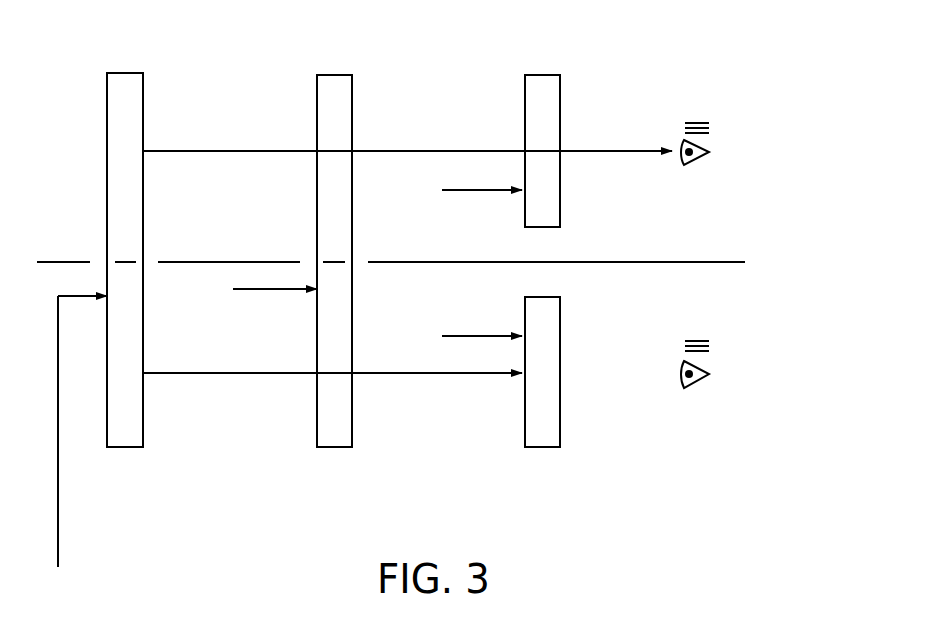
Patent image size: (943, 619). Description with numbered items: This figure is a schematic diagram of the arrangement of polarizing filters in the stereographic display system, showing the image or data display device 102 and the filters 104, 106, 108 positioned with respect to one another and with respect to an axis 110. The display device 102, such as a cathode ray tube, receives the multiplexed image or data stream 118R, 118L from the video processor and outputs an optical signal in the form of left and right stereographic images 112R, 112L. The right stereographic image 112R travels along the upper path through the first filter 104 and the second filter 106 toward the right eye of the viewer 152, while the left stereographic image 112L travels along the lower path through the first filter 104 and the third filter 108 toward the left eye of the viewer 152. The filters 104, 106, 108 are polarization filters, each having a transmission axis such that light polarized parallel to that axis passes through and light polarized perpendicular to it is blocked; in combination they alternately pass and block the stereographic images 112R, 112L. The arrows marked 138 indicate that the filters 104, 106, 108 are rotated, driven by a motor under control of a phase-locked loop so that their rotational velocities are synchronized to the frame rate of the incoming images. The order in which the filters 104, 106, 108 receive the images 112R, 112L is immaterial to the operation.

The image or data display device 102 is at (120, 73).
The first filter 104 is at (333, 75).
The second filter 106 is at (542, 75).
The third filter 108 is at (548, 448).
The axis 110 is at (593, 264).
The right stereographic image or data 112R is at (298, 149).
The left stereographic image or data 112L is at (263, 375).
The first video processor output signal (right) 118R is at (58, 513).
The first video processor output signal (left) 118L is at (119, 437).
The rotation of the filters 138 is at (270, 291).
The viewer 152 is at (722, 420).